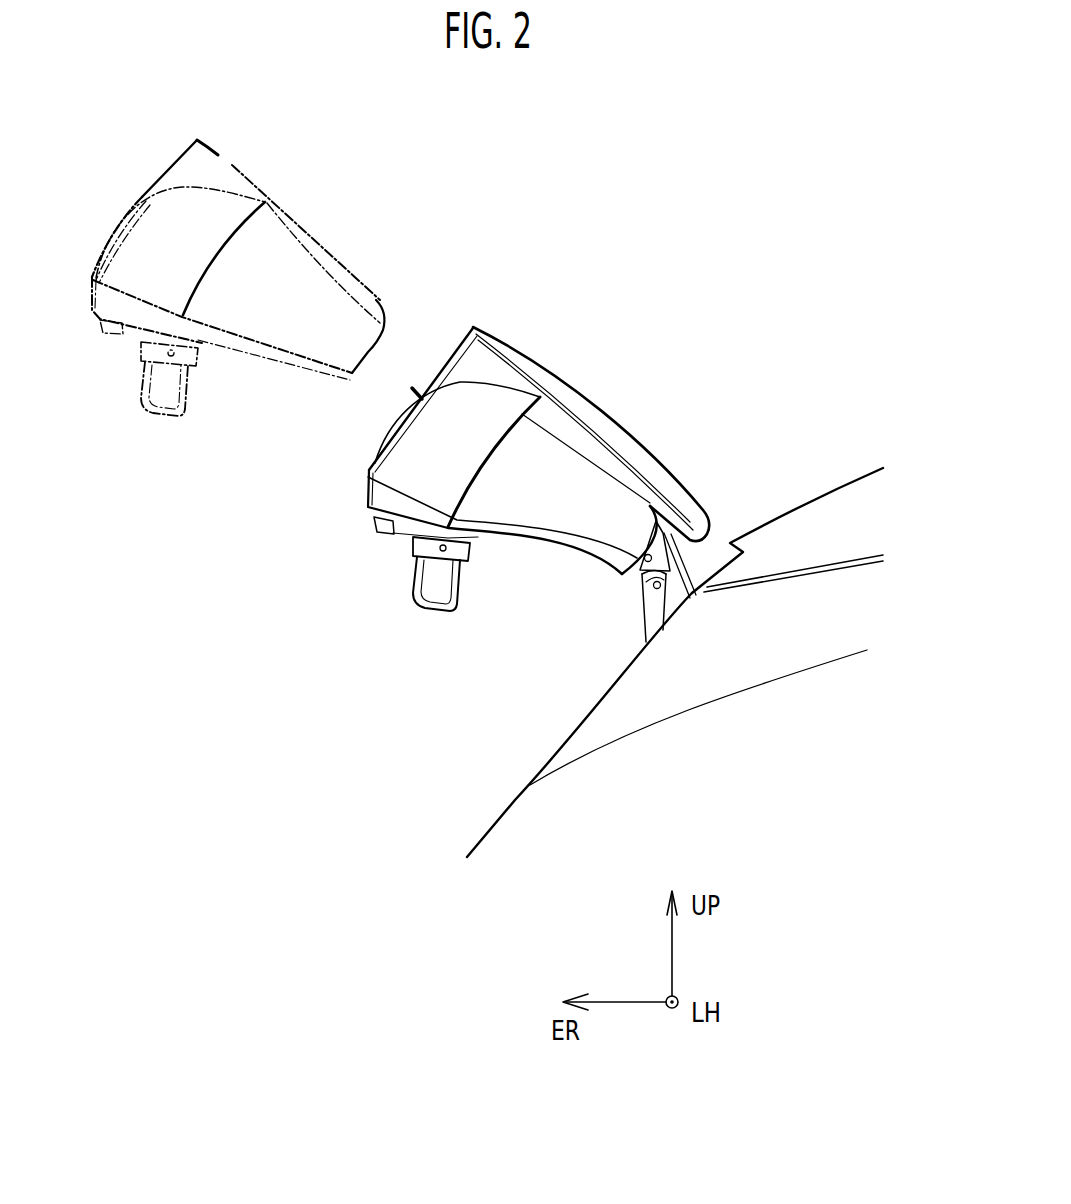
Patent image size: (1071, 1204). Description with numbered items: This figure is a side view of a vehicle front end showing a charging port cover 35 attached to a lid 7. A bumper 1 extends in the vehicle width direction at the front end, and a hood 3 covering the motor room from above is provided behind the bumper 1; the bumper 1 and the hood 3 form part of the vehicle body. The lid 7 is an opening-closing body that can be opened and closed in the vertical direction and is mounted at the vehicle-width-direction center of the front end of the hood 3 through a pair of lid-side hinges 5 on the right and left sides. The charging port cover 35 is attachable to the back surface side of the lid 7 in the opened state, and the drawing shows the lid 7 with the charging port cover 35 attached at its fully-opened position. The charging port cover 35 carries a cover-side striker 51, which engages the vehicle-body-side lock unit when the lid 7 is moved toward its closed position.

The bumper 1 is at (678, 688).
The hood 3 is at (833, 490).
The lid-side hinge 5 is at (653, 603).
The lid 7 is at (613, 428).
The charging port cover 35 is at (218, 155).
The cover-side striker 51 is at (418, 607).